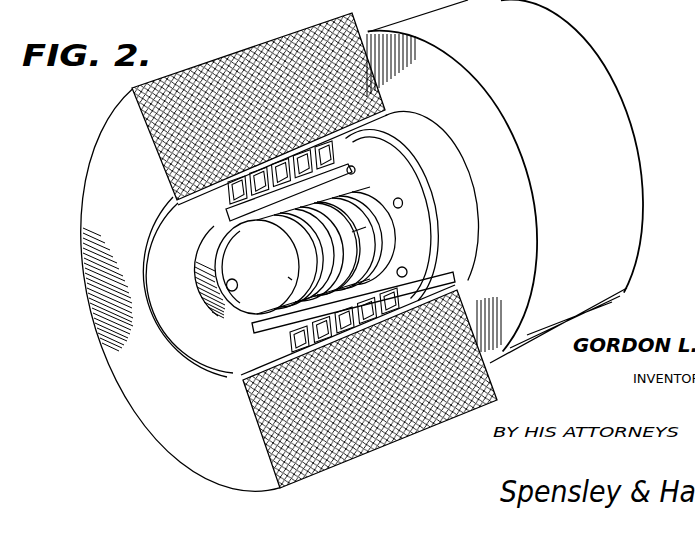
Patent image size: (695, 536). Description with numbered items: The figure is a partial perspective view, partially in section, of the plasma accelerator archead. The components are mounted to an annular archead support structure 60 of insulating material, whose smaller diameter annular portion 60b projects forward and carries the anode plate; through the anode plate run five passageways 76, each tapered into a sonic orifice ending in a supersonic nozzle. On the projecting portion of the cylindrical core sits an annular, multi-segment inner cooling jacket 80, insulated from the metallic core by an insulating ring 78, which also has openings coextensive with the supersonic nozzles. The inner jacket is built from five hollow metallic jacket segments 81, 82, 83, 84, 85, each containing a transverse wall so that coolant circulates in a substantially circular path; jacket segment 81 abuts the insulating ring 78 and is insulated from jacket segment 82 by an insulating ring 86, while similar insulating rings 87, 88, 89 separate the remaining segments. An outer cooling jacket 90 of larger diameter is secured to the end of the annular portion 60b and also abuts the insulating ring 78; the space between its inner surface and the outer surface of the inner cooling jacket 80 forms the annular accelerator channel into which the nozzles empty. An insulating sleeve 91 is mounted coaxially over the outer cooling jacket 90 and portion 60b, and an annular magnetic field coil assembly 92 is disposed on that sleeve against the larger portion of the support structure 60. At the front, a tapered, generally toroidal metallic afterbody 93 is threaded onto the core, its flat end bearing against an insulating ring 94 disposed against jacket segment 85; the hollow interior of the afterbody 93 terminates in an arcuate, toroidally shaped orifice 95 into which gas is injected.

The archead support structure 60 is at (597, 107).
The smaller diameter annular portion 60b is at (463, 198).
The passageway 76 is at (355, 170).
The insulating ring 78 is at (413, 168).
The inner cooling jacket 80 is at (243, 238).
The jacket segment 81 is at (369, 240).
The jacket segment 82 is at (374, 256).
The jacket segment 83 is at (354, 261).
The jacket segment 84 is at (334, 266).
The jacket segment 85 is at (313, 278).
The insulating ring 86 is at (399, 207).
The insulating ring 87 is at (366, 262).
The insulating ring 88 is at (305, 227).
The insulating ring 89 is at (310, 243).
The outer cooling jacket 90 is at (255, 346).
The insulating sleeve 91 is at (163, 230).
The magnetic field coil assembly 92 is at (412, 394).
The afterbody 93 is at (222, 248).
The insulating ring 94 is at (290, 277).
The orifice 95 is at (227, 288).